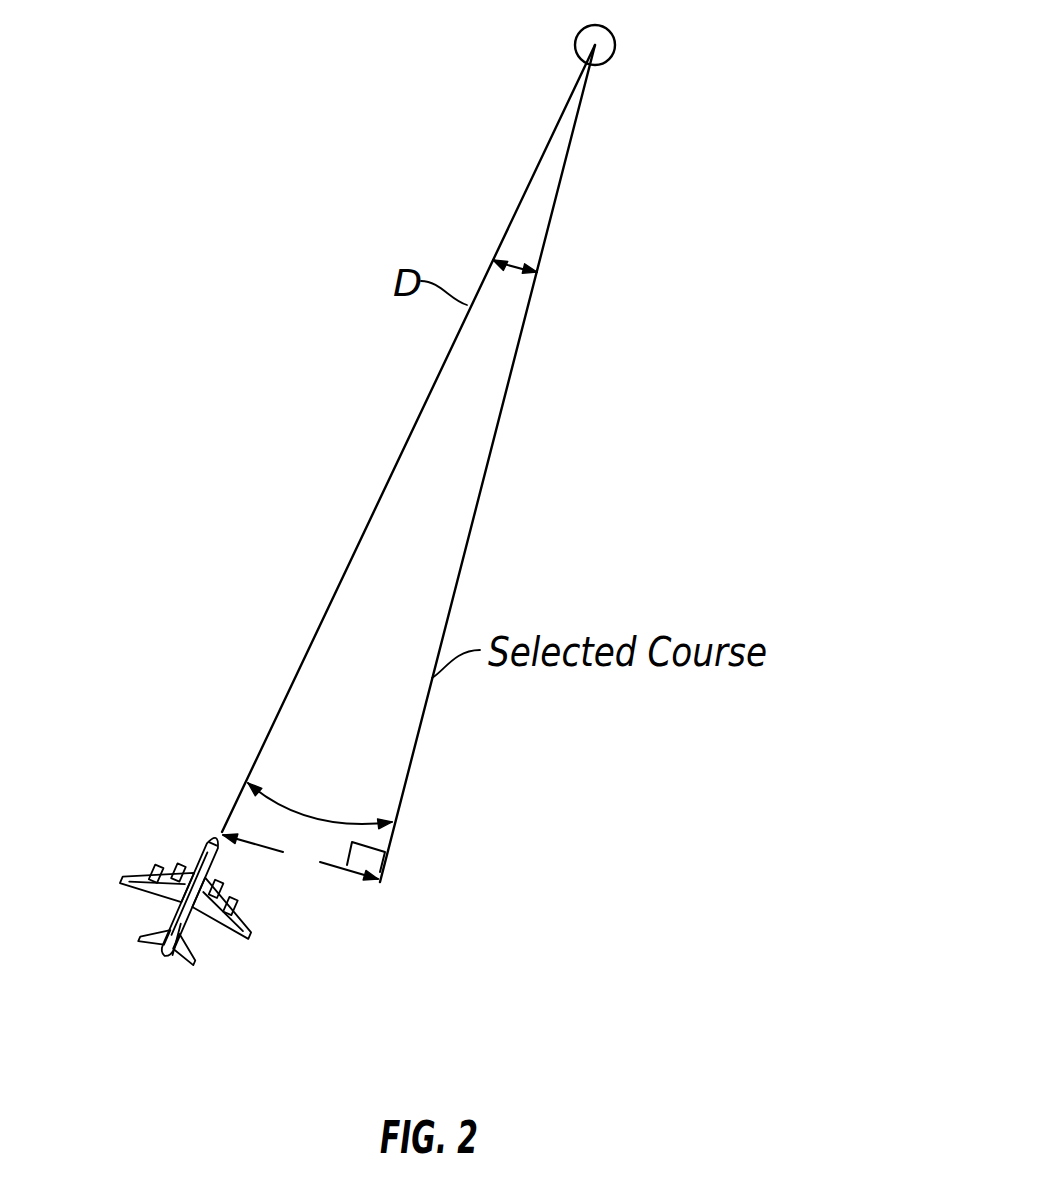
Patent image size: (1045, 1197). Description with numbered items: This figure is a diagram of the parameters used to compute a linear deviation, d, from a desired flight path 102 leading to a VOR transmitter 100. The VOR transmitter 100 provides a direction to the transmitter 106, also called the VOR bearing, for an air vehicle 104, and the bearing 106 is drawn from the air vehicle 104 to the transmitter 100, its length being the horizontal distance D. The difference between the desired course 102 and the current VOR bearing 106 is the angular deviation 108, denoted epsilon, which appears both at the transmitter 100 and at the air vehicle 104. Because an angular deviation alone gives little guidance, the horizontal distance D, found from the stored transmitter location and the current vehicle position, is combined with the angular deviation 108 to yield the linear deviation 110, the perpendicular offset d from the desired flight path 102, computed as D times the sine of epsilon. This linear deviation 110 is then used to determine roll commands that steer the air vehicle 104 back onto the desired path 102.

The VOR transmitter 100 is at (617, 45).
The desired flight path 102 is at (494, 447).
The air vehicle 104 is at (214, 836).
The direction to the transmitter 106 is at (347, 565).
The angular deviation 108 is at (525, 298).
The linear deviation 110 is at (328, 865).